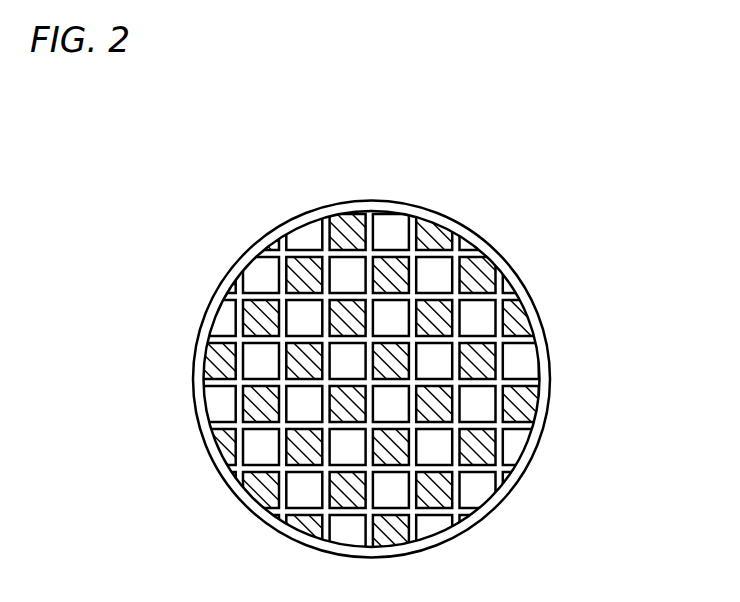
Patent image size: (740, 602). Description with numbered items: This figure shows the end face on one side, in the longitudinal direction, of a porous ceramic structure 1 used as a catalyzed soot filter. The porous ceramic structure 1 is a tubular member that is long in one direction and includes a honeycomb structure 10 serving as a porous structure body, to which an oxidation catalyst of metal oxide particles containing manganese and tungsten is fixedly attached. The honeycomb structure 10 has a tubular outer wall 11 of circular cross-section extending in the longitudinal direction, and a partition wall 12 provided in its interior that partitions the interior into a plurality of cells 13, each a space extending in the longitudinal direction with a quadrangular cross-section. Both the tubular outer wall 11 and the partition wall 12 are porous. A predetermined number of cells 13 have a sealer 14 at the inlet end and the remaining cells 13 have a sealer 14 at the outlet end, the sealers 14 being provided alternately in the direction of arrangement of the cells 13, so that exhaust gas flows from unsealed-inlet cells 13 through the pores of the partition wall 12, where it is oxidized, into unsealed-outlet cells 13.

The porous ceramic structure 1 is at (240, 136).
The honeycomb structure 10 is at (423, 197).
The tubular outer wall 11 is at (473, 243).
The partition wall 12 is at (495, 297).
The cell 13 is at (482, 313).
The sealer 14 is at (265, 312).